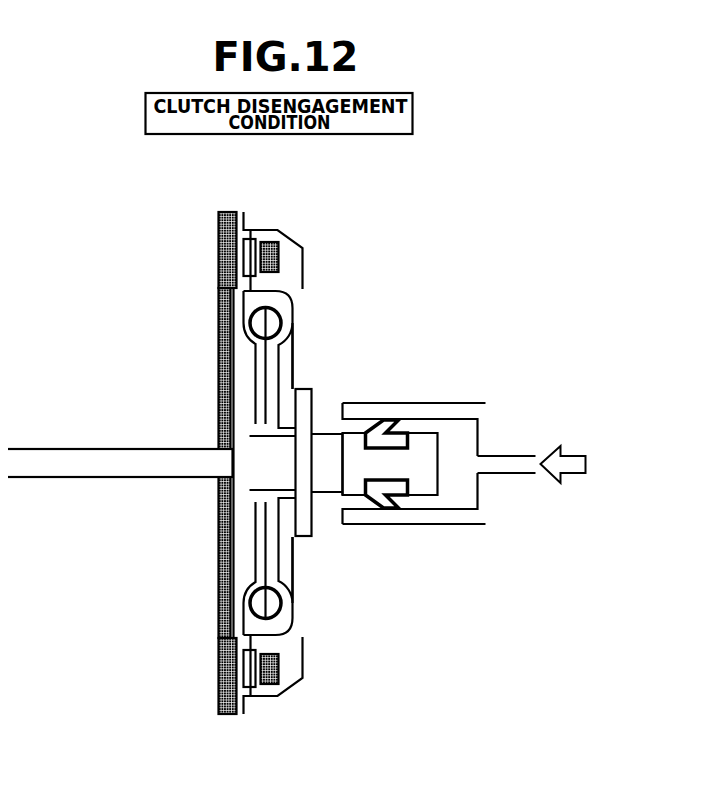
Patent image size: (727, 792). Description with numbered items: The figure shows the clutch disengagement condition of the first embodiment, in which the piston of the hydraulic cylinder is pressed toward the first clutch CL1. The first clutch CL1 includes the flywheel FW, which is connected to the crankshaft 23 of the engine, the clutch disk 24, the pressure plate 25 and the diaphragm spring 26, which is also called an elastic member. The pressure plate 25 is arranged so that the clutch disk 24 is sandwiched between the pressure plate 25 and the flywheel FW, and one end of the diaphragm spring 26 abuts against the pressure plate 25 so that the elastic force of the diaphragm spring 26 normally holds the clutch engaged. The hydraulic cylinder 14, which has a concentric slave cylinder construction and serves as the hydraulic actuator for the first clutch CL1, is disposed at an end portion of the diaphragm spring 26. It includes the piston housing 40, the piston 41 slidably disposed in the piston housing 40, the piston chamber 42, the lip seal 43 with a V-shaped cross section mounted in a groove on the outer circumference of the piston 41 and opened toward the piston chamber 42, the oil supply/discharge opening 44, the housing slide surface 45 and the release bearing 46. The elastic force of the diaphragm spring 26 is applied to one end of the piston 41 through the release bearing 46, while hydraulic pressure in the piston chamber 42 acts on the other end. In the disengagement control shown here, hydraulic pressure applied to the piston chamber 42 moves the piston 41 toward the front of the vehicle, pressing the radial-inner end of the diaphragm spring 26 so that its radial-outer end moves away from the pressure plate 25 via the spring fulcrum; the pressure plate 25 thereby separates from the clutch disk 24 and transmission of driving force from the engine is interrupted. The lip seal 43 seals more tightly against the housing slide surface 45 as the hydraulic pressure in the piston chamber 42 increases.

The flywheel FW is at (214, 250).
The first clutch CL1 is at (316, 287).
The crankshaft 23 is at (70, 447).
The clutch disk 24 is at (253, 235).
The pressure plate 25 is at (284, 246).
The diaphragm spring 26 is at (305, 320).
The hydraulic cylinder 14 is at (428, 452).
The piston housing 40 is at (385, 401).
The piston 41 is at (354, 500).
The piston chamber 42 is at (466, 460).
The lip seal 43 is at (406, 495).
The oil supply/discharge opening 44 is at (483, 462).
The housing slide surface 45 is at (443, 503).
The release bearing 46 is at (303, 537).